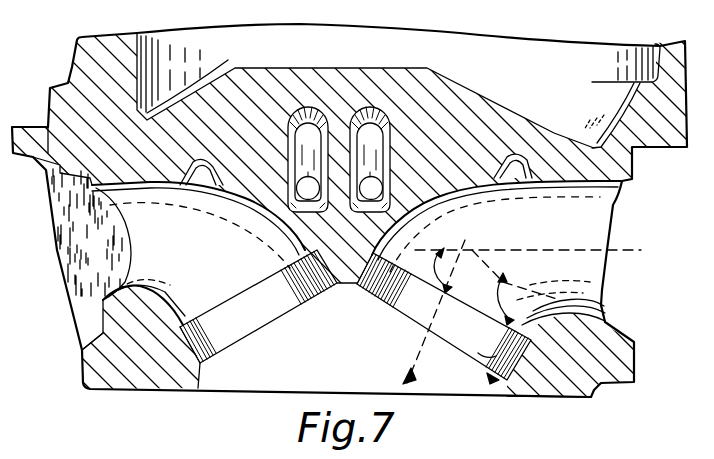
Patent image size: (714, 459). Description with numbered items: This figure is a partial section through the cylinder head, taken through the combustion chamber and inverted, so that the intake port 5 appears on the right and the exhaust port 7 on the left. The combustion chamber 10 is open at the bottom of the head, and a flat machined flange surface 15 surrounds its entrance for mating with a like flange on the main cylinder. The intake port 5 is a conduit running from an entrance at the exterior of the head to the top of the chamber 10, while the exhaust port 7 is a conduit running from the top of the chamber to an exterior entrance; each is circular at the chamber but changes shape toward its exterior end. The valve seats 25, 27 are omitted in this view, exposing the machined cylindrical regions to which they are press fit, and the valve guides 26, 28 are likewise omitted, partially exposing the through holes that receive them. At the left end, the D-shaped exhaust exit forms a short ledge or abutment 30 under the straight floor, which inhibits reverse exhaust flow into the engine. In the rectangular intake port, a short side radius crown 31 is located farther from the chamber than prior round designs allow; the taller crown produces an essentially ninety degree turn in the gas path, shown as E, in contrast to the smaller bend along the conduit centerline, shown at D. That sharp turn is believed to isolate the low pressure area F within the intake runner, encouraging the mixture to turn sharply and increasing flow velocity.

The intake port 5 is at (537, 234).
The exhaust port 7 is at (178, 236).
The combustion chamber 10 is at (354, 382).
The flange surface 15 is at (527, 398).
The valve seat 25 is at (420, 307).
The valve guide 26 is at (508, 156).
The valve seat 27 is at (270, 305).
The valve guide 28 is at (228, 161).
The ledge or abutment 30 is at (76, 331).
The short side radius crown 31 is at (606, 305).
The bend along the conduit centerline D is at (449, 270).
The ninety degree turn E is at (492, 299).
The low pressure area F is at (487, 344).